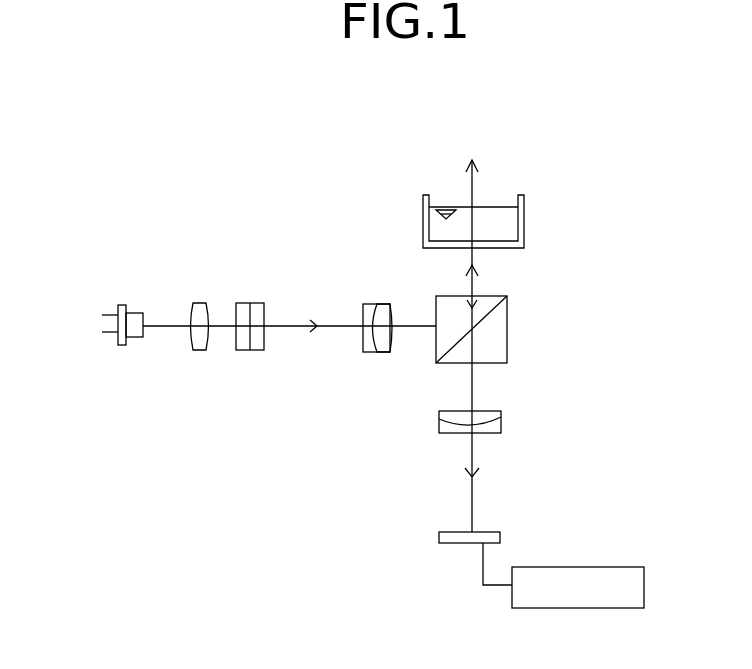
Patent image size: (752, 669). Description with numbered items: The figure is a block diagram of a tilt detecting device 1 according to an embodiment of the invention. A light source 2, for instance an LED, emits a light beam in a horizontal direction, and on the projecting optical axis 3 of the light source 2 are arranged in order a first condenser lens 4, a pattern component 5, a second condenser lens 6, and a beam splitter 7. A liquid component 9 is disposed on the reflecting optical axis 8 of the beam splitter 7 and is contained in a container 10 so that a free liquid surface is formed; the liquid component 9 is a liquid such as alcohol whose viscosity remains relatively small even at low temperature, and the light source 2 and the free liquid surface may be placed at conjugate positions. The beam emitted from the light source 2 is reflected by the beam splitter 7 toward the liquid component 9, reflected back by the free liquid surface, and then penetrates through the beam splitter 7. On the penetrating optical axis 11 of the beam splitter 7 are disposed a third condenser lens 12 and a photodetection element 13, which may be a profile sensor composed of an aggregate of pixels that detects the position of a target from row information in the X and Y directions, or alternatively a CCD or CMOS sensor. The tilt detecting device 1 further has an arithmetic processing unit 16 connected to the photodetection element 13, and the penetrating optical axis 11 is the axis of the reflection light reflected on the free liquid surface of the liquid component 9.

The tilt detecting device 1 is at (251, 150).
The light source 2 is at (132, 312).
The projecting optical axis 3 is at (335, 324).
The first condenser lens 4 is at (198, 303).
The pattern component 5 is at (246, 303).
The second condenser lens 6 is at (378, 304).
The beam splitter 7 is at (507, 328).
The reflecting optical axis 8 is at (465, 280).
The liquid component 9 is at (448, 207).
The container 10 is at (525, 222).
The penetrating optical axis 11 is at (468, 448).
The third condenser lens 12 is at (501, 415).
The photodetection element 13 is at (487, 530).
The arithmetic processing unit 16 is at (613, 567).